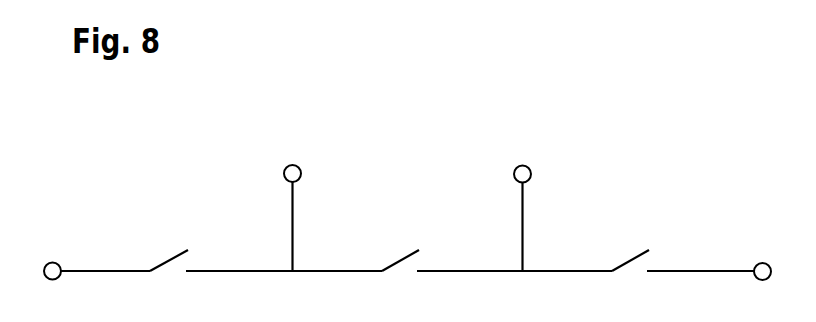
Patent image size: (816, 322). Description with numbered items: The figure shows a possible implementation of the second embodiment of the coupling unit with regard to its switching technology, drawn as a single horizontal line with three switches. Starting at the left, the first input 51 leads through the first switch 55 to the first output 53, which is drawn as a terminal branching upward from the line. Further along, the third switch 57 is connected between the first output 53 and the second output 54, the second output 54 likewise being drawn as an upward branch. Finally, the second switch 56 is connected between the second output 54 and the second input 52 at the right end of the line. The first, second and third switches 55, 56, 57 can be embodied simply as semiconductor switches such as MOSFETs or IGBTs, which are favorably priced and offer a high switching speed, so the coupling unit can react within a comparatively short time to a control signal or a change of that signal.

The first input 51 is at (53, 262).
The second input 52 is at (762, 262).
The first output 53 is at (292, 163).
The second output 54 is at (522, 164).
The first switch 55 is at (166, 262).
The second switch 56 is at (629, 262).
The third switch 57 is at (398, 262).